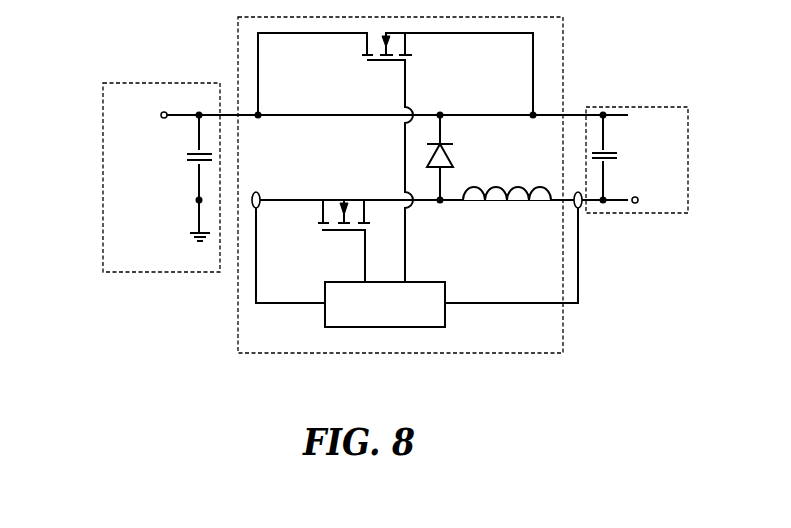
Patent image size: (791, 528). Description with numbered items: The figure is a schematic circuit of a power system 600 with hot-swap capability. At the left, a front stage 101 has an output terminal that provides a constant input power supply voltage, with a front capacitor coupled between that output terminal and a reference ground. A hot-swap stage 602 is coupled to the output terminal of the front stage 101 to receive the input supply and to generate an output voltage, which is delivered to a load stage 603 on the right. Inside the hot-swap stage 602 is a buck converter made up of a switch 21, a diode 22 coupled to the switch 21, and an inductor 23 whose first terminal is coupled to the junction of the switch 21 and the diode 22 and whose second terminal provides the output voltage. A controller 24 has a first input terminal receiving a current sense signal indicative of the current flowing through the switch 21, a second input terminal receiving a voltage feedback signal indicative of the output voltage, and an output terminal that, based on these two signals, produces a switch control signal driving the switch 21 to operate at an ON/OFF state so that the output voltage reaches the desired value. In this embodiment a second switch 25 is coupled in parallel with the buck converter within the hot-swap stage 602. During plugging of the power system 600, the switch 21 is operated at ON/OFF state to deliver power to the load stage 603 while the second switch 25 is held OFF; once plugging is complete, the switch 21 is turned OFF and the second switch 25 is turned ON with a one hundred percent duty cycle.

The power system 600 is at (96, 103).
The front stage 101 is at (157, 257).
The hot-swap stage 602 is at (552, 346).
The load stage 603 is at (678, 135).
The second switch 25 is at (356, 47).
The switch 21 is at (339, 197).
The diode 22 is at (455, 156).
The inductor 23 is at (507, 188).
The controller 24 is at (408, 278).